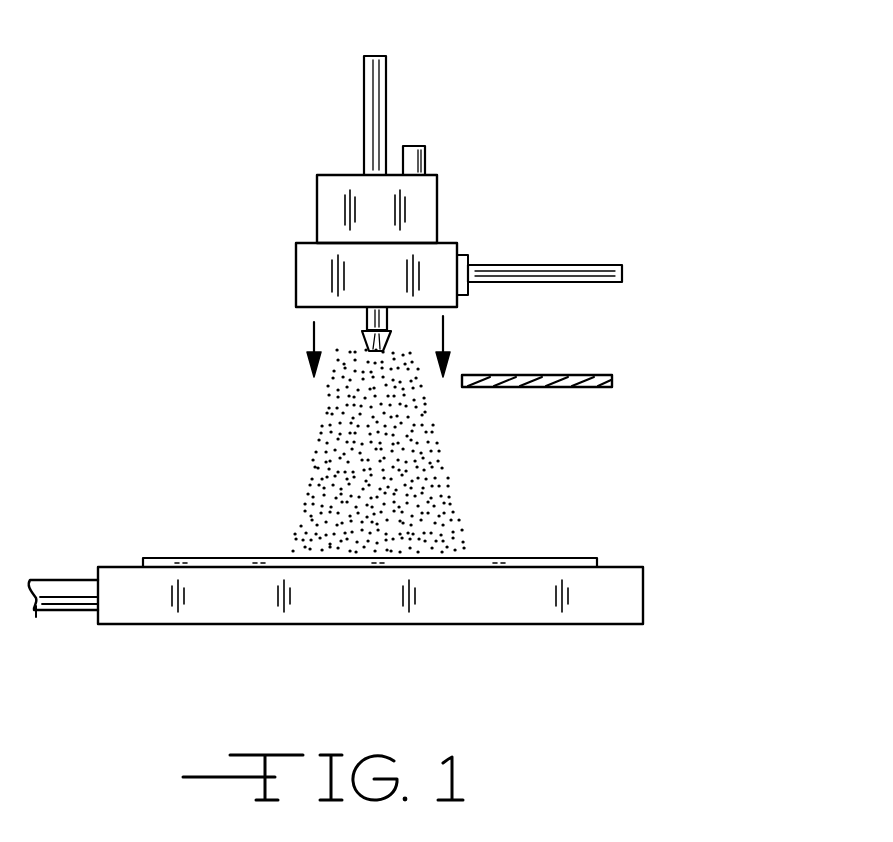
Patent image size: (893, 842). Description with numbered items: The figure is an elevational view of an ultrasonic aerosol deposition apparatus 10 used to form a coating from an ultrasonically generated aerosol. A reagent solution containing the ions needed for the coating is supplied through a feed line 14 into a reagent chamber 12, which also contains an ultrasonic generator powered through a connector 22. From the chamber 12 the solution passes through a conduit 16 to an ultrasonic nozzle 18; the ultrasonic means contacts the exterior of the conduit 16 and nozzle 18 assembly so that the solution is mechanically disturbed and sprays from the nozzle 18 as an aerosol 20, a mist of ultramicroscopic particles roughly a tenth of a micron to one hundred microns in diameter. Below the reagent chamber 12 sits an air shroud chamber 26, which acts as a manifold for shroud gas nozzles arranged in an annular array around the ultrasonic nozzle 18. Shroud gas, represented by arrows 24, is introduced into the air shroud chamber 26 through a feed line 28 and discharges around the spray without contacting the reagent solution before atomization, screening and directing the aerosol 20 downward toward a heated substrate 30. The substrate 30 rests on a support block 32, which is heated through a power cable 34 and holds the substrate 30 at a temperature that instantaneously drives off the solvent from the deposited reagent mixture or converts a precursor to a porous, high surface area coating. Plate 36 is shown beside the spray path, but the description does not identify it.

The ultrasonic aerosol deposition apparatus 10 is at (714, 170).
The reagent chamber 12 is at (422, 213).
The feed line 14 is at (387, 87).
The conduit 16 is at (367, 316).
The ultrasonic nozzle 18 is at (392, 340).
The aerosol 20 is at (460, 460).
The connector 22 is at (427, 157).
The shroud gas 24 is at (312, 337).
The air shroud chamber 26 is at (313, 275).
The feed line 28 is at (547, 267).
The substrate 30 is at (548, 557).
The support block 32 is at (628, 590).
The power cable 34 is at (63, 580).
The masking plate 36 is at (590, 374).